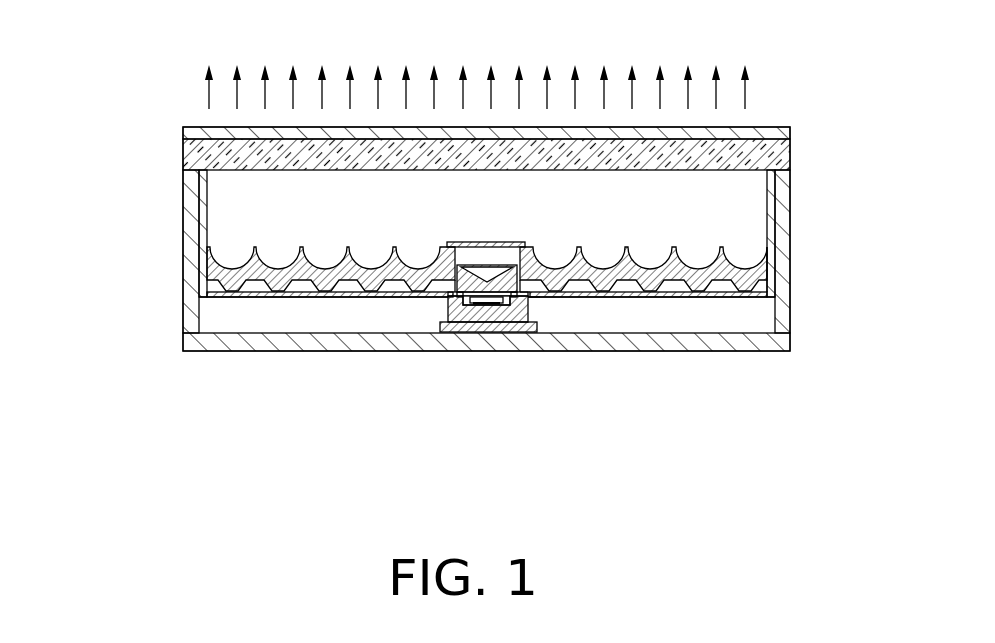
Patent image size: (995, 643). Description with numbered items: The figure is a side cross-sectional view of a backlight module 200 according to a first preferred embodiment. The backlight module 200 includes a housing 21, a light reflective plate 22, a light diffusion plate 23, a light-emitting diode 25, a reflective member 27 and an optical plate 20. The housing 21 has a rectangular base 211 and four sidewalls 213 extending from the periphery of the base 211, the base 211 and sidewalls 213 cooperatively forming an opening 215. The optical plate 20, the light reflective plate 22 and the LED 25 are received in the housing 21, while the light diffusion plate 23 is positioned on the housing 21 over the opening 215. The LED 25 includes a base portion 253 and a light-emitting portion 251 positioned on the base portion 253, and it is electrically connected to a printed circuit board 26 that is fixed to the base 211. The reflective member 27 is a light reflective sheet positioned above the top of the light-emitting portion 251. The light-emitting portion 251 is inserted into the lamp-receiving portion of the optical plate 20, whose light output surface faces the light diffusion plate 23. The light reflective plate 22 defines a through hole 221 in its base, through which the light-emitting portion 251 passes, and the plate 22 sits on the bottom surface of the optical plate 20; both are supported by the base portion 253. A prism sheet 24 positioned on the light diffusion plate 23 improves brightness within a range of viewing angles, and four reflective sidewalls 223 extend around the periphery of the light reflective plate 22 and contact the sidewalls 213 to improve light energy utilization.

The backlight module 200 is at (160, 93).
The housing 21 is at (410, 280).
The base 211 is at (441, 361).
The sidewalls 213 is at (192, 233).
The opening 215 is at (760, 197).
The optical plate 20 is at (753, 277).
The reflective sidewalls 223 is at (767, 255).
The light reflective plate 22 is at (738, 296).
The through hole 221 is at (533, 297).
The light diffusion plate 23 is at (780, 157).
The prism sheet 24 is at (758, 131).
The light-emitting diode (LED) 25 is at (425, 373).
The light-emitting portion 251 is at (455, 294).
The base portion 253 is at (478, 314).
The printed circuit board 26 is at (484, 306).
The reflective member 27 is at (490, 241).